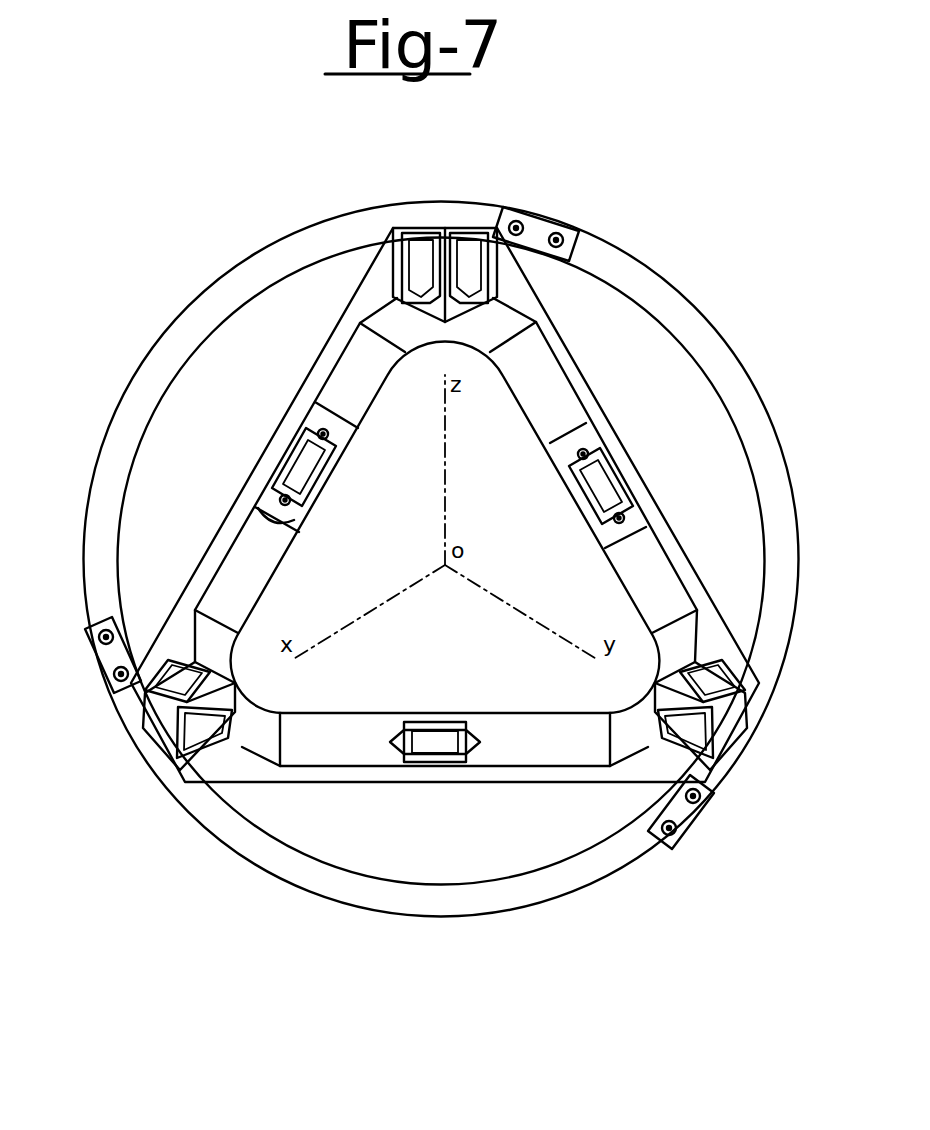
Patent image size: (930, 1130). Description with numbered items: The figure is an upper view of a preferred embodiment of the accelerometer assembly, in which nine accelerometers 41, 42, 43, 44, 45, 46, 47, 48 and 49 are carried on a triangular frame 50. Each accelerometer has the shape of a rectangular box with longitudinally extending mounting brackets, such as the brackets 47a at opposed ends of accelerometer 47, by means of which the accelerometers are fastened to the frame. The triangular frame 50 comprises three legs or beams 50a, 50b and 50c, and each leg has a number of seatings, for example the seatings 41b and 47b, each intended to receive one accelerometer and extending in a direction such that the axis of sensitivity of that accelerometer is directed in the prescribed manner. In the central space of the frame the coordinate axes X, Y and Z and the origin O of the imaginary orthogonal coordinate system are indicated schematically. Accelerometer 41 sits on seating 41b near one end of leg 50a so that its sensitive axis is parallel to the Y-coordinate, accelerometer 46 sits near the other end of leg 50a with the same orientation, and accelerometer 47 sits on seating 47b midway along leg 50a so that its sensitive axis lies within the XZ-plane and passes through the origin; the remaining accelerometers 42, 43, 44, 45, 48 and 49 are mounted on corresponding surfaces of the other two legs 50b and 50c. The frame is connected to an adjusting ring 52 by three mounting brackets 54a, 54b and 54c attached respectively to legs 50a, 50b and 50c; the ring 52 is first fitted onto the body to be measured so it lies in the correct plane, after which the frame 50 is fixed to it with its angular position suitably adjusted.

The accelerometer 41 is at (428, 250).
The seating 41b is at (437, 252).
The accelerometer 42 is at (463, 250).
The accelerometer 43 is at (735, 712).
The accelerometer 44 is at (703, 738).
The accelerometer 45 is at (168, 765).
The accelerometer 46 is at (142, 745).
The accelerometer 47 is at (292, 479).
The mounting bracket 47a is at (316, 432).
The seating 47b is at (290, 518).
The accelerometer 48 is at (598, 484).
The accelerometer 49 is at (425, 735).
The triangular frame 50 is at (533, 790).
The leg 50a is at (340, 383).
The leg 50b is at (568, 403).
The leg 50c is at (316, 760).
The adjusting ring 52 is at (508, 905).
The mounting bracket 54a is at (116, 666).
The mounting bracket 54b is at (568, 228).
The mounting bracket 54c is at (688, 812).